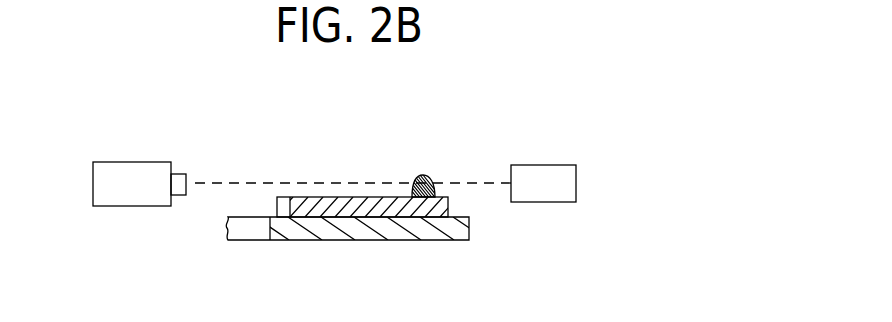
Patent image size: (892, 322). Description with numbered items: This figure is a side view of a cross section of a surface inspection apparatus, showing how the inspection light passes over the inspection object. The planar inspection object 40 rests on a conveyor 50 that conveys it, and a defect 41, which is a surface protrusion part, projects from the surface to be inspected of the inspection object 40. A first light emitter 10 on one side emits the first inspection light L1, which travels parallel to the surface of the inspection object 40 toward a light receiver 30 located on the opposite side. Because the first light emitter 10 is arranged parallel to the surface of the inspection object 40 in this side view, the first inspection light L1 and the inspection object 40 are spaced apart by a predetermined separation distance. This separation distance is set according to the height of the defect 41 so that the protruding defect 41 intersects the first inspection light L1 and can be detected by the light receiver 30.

The first light emitter 10 is at (130, 173).
The first inspection light L1 is at (220, 183).
The light receiver 30 is at (543, 173).
The inspection object 40 is at (352, 190).
The defect 41 is at (427, 177).
The conveyor 50 is at (250, 233).